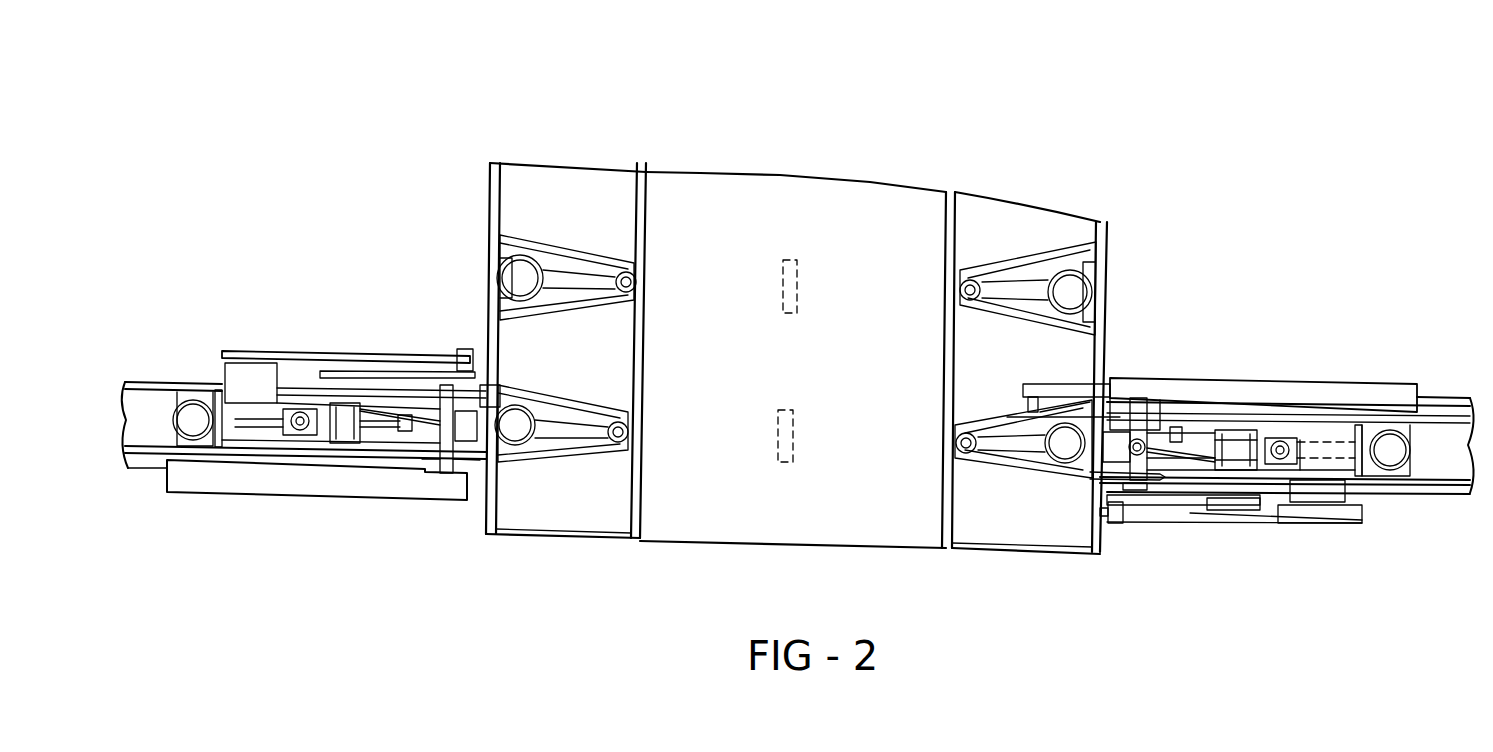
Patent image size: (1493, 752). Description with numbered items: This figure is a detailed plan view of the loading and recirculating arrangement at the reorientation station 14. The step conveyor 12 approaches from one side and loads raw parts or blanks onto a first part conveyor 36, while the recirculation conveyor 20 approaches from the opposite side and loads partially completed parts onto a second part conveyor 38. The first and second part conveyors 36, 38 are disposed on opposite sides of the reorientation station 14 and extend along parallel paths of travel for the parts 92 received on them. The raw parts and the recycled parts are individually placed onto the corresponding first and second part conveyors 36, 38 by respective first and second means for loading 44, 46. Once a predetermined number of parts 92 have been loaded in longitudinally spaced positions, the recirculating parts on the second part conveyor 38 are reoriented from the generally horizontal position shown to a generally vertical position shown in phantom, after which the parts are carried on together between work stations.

The step conveyor 12 is at (152, 385).
The reorientation station 14 is at (1005, 50).
The recirculation conveyor 20 is at (1408, 495).
The first part conveyor 36 is at (591, 518).
The second part conveyor 38 is at (1033, 530).
The first means for loading 44 is at (368, 302).
The second means for loading 46 is at (1252, 521).
The part 92 is at (557, 262).